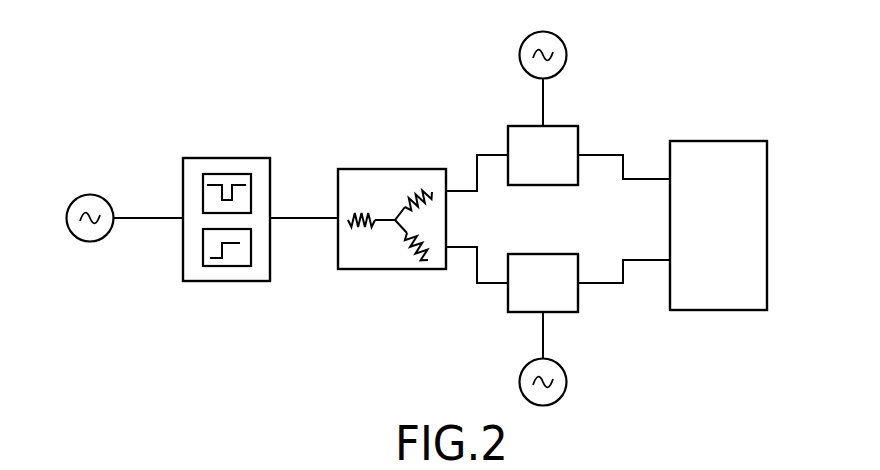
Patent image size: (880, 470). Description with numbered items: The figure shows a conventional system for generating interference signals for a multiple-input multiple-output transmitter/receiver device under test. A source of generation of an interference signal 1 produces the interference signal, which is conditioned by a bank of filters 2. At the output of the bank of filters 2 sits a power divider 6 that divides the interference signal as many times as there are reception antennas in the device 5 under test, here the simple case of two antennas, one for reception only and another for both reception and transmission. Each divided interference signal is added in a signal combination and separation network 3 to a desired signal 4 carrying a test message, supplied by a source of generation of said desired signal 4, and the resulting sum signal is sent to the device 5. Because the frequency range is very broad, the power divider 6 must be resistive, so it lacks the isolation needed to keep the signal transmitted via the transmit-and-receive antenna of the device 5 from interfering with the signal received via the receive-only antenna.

The source of generation of an interference signal 1 is at (78, 197).
The bank of filters 2 is at (227, 158).
The signal combination and separation network 3 is at (508, 133).
The source of generation of the desired signal 4 is at (567, 45).
The device under test 5 is at (710, 141).
The power divider 6 is at (387, 169).